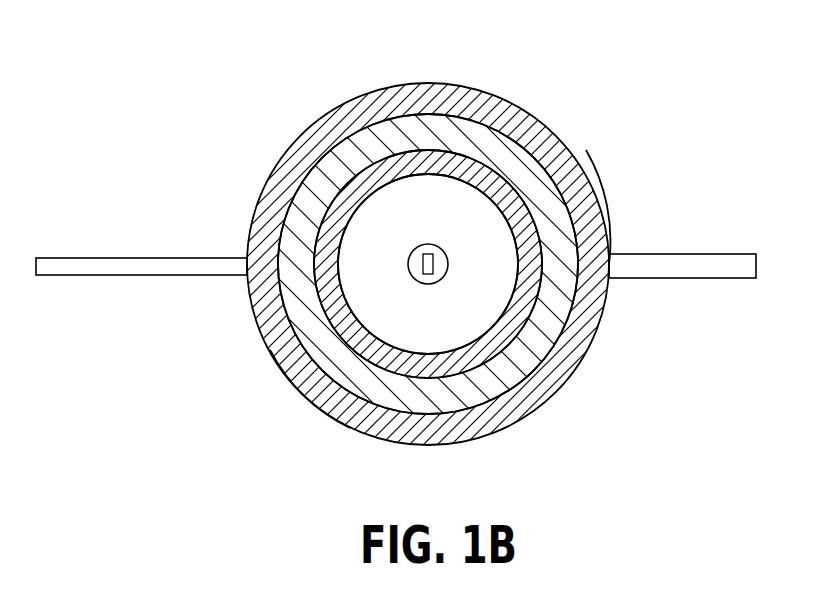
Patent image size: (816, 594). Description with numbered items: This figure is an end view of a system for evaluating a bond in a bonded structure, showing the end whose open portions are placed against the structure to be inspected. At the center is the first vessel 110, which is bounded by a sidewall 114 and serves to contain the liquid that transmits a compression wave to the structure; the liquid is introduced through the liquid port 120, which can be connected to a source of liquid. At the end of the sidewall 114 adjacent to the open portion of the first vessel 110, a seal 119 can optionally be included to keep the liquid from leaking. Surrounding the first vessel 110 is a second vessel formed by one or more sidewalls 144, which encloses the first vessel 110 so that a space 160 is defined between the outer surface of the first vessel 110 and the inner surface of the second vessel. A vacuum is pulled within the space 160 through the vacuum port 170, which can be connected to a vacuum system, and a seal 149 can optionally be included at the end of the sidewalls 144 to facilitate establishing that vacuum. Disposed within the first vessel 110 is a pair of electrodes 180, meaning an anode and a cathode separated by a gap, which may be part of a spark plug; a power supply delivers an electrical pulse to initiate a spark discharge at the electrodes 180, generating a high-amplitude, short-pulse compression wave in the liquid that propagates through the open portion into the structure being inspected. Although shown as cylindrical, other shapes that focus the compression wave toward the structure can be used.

The first vessel 110 is at (462, 222).
The sidewall 114 is at (333, 132).
The seal 119 is at (330, 242).
The liquid port 120 is at (720, 250).
The sidewalls 144 is at (478, 80).
The seal 149 is at (603, 210).
The space 160 is at (303, 392).
The vacuum port 170 is at (137, 258).
The pair of electrodes 180 is at (440, 282).